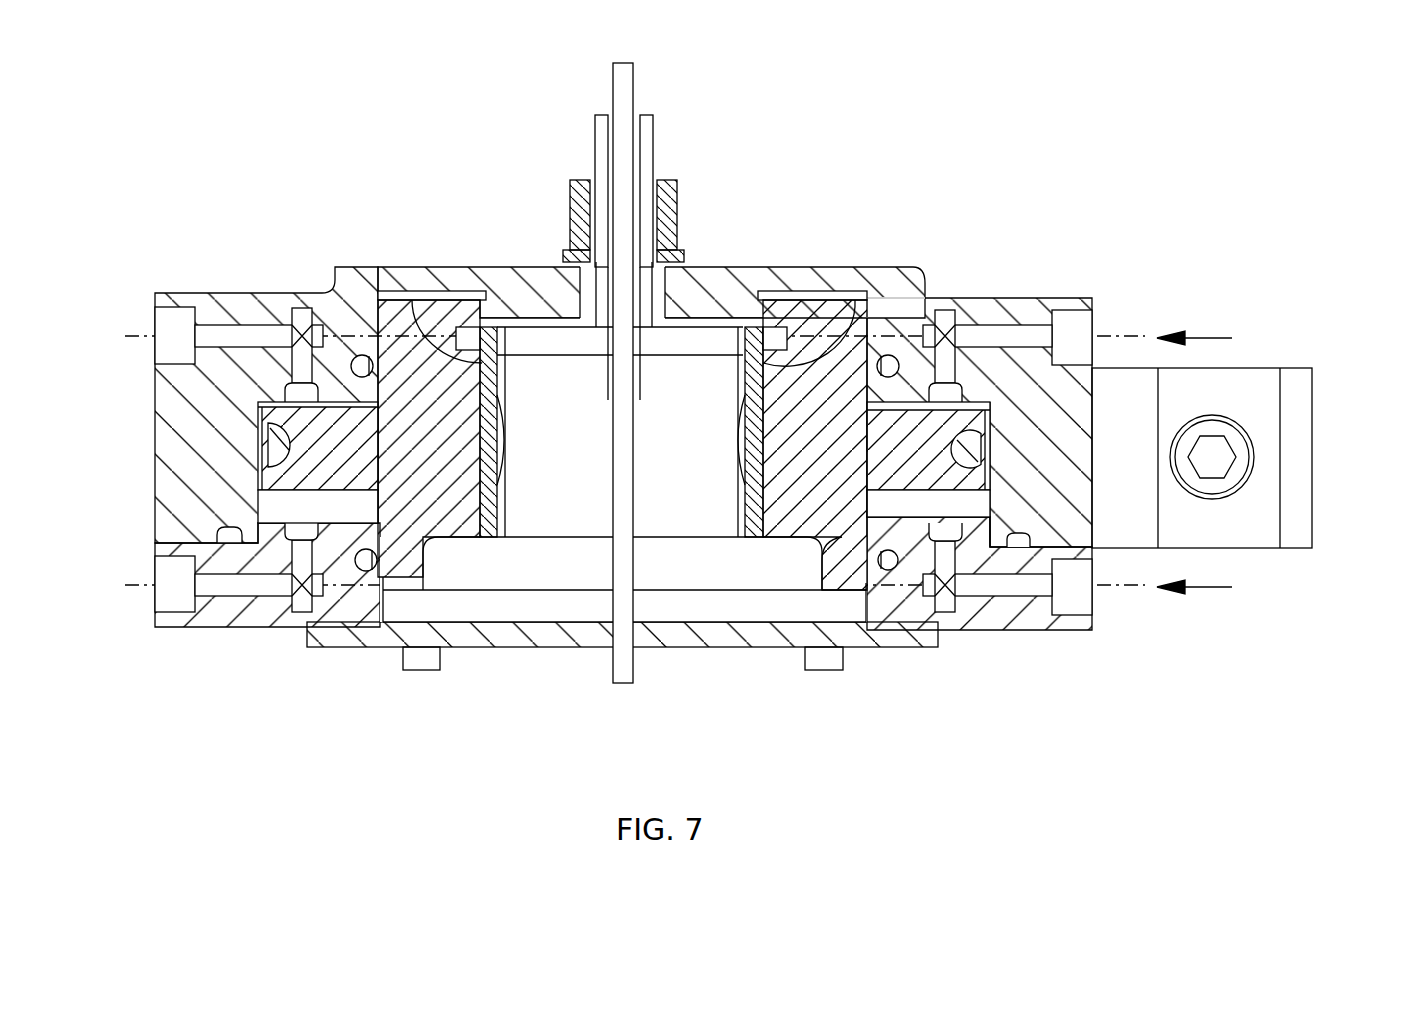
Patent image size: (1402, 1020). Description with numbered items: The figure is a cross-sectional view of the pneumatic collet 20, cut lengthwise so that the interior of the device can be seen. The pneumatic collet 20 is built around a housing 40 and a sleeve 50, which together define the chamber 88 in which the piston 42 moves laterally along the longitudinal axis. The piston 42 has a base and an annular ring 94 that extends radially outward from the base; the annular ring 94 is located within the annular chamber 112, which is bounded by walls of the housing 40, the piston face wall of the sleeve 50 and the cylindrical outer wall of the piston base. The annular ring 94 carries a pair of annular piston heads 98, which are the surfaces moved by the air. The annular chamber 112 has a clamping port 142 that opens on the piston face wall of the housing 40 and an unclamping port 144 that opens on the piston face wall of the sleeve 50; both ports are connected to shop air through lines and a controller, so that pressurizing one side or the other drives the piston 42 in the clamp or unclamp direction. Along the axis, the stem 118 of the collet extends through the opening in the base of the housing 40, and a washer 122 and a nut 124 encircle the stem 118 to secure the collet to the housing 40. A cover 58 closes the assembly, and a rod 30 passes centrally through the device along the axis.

The pneumatic collet 20 is at (1108, 120).
The rod 30 is at (634, 80).
The housing 40 is at (868, 267).
The piston 42 is at (790, 526).
The sleeve 50 is at (245, 620).
The cover 58 is at (888, 636).
The chamber 88 is at (478, 566).
The annular ring 94 is at (250, 510).
The annular piston heads 98 is at (265, 413).
The annular chamber 112 is at (275, 512).
The stem 118 is at (655, 150).
The washer 122 is at (686, 256).
The nut 124 is at (568, 215).
The clamping port 142 is at (284, 337).
The unclamping port 144 is at (962, 606).